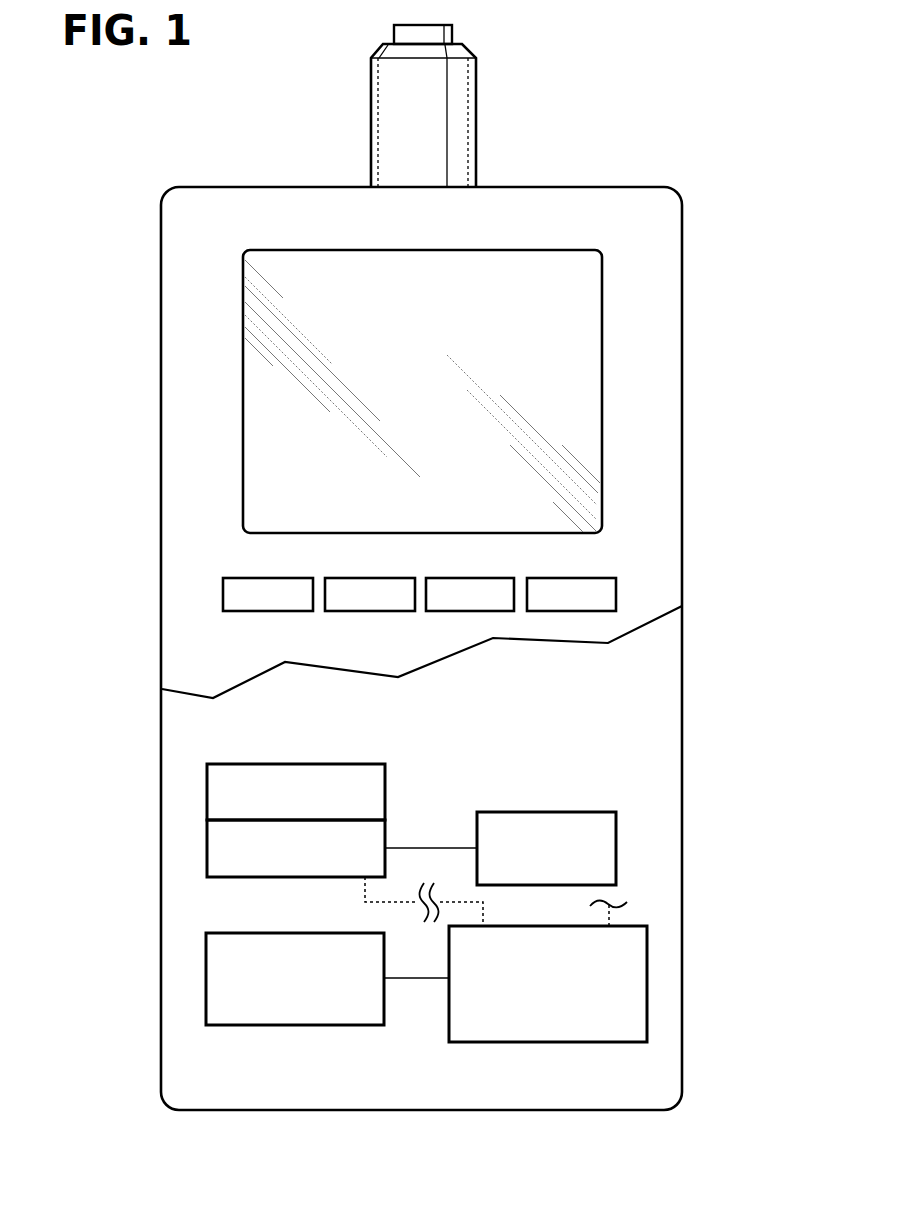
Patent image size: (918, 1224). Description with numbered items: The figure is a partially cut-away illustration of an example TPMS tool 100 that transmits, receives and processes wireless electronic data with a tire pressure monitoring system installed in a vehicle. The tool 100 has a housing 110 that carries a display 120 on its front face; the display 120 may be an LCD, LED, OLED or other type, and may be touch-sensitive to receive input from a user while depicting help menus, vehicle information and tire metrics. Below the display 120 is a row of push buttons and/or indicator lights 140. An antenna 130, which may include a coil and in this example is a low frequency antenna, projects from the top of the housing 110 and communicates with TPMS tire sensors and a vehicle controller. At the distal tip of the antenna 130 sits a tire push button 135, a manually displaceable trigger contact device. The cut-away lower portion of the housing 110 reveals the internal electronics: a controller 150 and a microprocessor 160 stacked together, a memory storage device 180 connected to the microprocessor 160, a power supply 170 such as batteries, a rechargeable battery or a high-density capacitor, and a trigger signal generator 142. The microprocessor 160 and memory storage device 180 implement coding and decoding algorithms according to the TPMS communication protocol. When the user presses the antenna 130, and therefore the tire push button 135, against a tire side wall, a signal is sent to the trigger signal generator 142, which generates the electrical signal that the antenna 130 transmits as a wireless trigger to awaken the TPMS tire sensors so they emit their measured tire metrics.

The TPMS tool 100 is at (654, 122).
The housing 110 is at (683, 235).
The display 120 is at (550, 314).
The antenna 130 is at (477, 124).
The tire push button 135 is at (403, 35).
The push buttons and/or indicator lights 140 is at (597, 568).
The trigger signal generator 142 is at (610, 1042).
The controller 150 is at (207, 792).
The microprocessor 160 is at (207, 848).
The power supply 170 is at (207, 980).
The memory storage device 180 is at (616, 848).